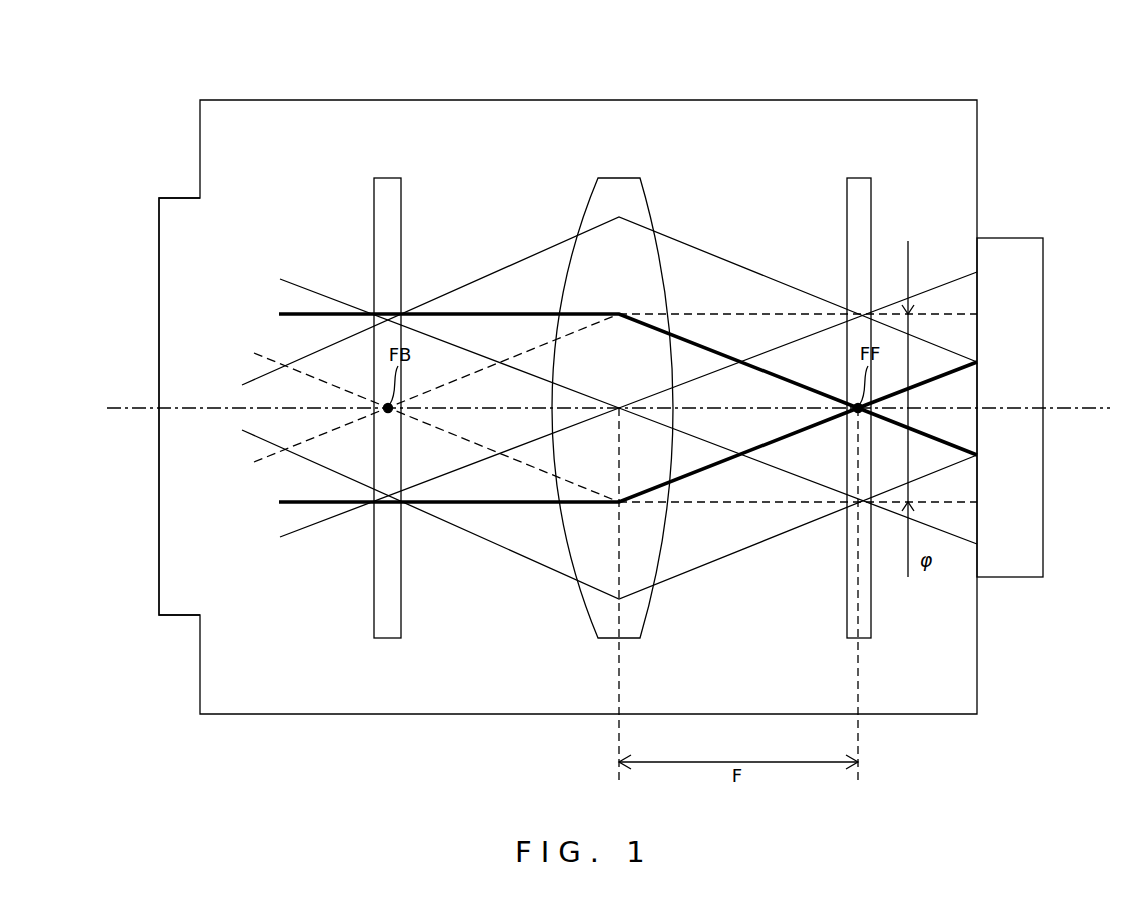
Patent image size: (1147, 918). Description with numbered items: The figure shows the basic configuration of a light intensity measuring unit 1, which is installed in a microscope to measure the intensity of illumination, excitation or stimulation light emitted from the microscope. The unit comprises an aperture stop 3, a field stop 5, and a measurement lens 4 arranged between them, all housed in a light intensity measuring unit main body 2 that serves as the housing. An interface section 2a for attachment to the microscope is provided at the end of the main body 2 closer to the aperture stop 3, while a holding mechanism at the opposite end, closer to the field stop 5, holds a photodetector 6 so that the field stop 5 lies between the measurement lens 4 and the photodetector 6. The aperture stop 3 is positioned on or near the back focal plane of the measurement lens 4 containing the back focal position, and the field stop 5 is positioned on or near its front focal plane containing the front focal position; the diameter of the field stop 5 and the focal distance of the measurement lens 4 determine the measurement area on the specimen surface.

The light intensity measuring unit 1 is at (603, 378).
The light intensity measuring unit main body 2 is at (763, 100).
The interface section 2a is at (159, 286).
The aperture stop 3 is at (387, 177).
The measurement lens 4 is at (615, 177).
The field stop 5 is at (858, 177).
The photodetector 6 is at (1005, 238).